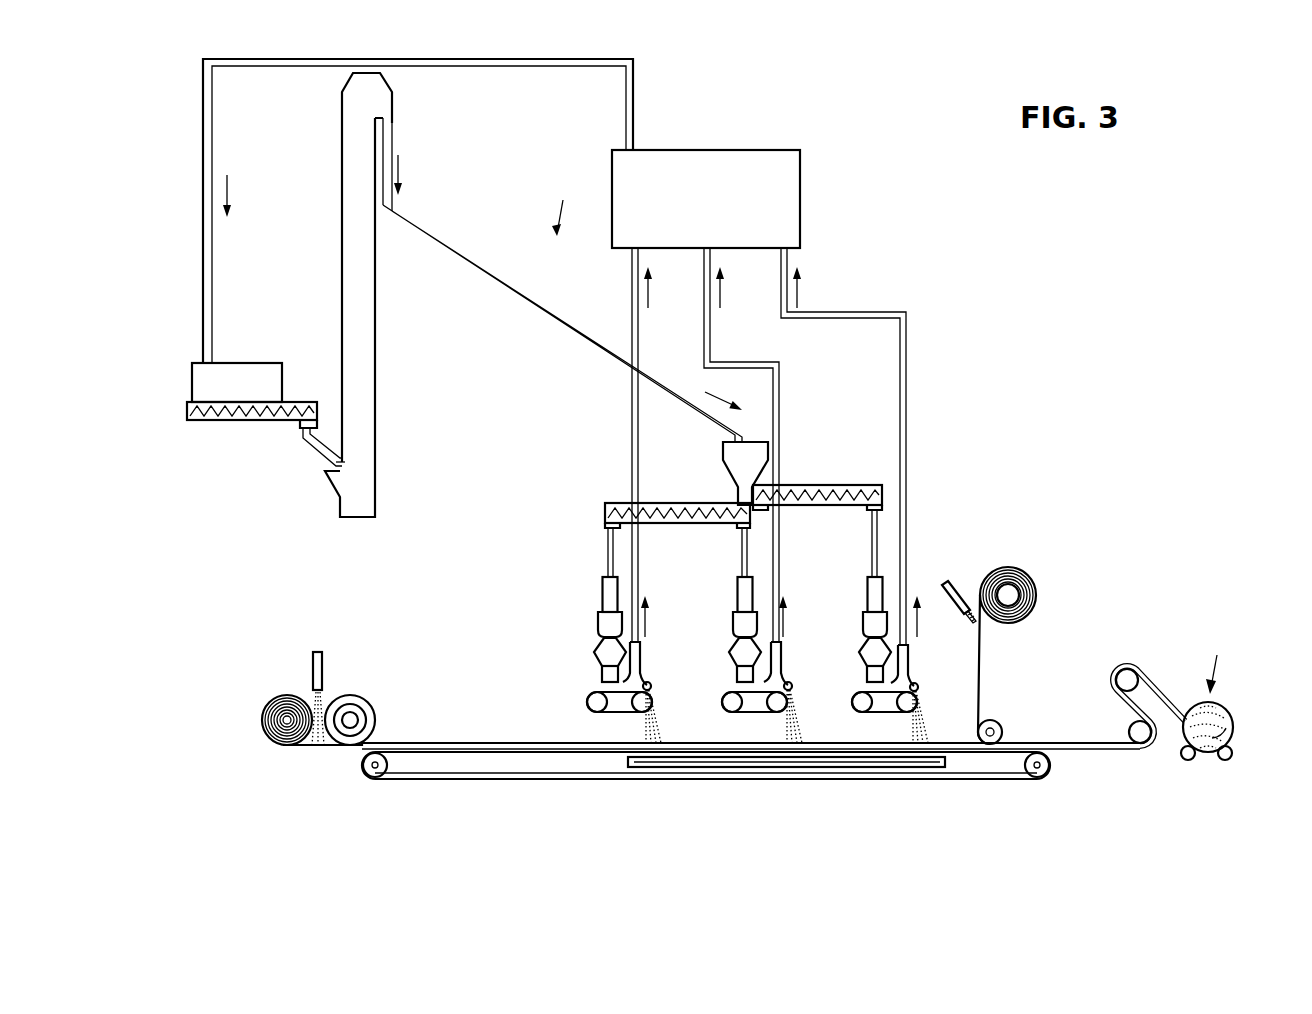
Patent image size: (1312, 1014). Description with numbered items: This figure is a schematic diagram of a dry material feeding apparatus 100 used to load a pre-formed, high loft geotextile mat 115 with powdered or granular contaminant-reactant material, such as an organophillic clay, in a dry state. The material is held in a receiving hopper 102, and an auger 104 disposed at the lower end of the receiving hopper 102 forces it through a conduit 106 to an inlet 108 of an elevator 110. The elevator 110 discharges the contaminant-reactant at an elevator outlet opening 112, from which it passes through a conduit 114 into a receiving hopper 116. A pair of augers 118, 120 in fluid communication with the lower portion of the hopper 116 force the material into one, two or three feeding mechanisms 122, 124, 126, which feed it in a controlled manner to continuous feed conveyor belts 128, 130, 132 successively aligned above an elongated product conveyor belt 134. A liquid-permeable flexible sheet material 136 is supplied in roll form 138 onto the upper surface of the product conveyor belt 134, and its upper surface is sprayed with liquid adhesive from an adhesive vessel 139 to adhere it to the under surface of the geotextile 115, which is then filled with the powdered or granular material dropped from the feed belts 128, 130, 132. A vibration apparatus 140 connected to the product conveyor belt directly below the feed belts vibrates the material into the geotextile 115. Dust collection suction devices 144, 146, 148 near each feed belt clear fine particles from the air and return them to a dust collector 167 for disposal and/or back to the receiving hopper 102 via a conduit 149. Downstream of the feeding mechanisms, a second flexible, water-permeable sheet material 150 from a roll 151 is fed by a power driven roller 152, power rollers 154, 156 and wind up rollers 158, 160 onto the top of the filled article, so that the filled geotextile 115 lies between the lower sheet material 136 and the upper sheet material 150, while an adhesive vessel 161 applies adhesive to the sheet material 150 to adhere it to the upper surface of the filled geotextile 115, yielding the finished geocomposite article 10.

The absorbent article product roll 10 is at (1208, 692).
The dry material feeding apparatus 100 is at (565, 205).
The receiving hopper 102 is at (256, 375).
The auger 104 is at (228, 412).
The conduit 106 is at (312, 448).
The inlet 108 is at (345, 463).
The elevator 110 is at (377, 358).
The elevator outlet opening 112 is at (393, 127).
The conduit 114 is at (468, 250).
The high loft geotextile mat 115 is at (396, 740).
The receiving hopper 116 is at (762, 456).
The auger 118 is at (678, 502).
The auger 120 is at (848, 487).
The feeding mechanism 122 is at (603, 585).
The feeding mechanism 124 is at (738, 585).
The feeding mechanism 126 is at (868, 585).
The continuous feed conveyor belt 128 is at (610, 712).
The continuous feed conveyor belt 130 is at (745, 712).
The continuous feed conveyor belt 132 is at (870, 712).
The product conveyor belt 134 is at (429, 779).
The liquid-permeable flexible sheet material 136 is at (323, 748).
The roll 138 is at (280, 696).
The adhesive vessel 139 is at (318, 652).
The vibration apparatus 140 is at (805, 768).
The dust collection suction device 144 is at (639, 660).
The dust collection suction device 146 is at (779, 660).
The dust collection suction device 148 is at (907, 660).
The conduit 149 is at (530, 59).
The second flexible water-permeable sheet material 150 is at (979, 664).
The roll 151 is at (1037, 586).
The power driven roller 152 is at (1001, 724).
The power roller 154 is at (1129, 727).
The power roller 156 is at (1126, 672).
The wind up roller 158 is at (1185, 760).
The wind up roller 160 is at (1230, 758).
The adhesive vessel 161 is at (953, 580).
The dust collector 167 is at (800, 203).